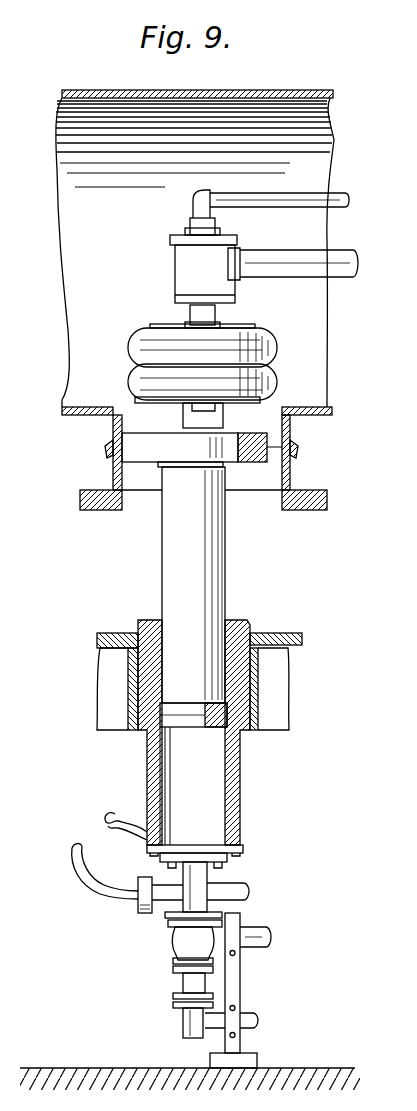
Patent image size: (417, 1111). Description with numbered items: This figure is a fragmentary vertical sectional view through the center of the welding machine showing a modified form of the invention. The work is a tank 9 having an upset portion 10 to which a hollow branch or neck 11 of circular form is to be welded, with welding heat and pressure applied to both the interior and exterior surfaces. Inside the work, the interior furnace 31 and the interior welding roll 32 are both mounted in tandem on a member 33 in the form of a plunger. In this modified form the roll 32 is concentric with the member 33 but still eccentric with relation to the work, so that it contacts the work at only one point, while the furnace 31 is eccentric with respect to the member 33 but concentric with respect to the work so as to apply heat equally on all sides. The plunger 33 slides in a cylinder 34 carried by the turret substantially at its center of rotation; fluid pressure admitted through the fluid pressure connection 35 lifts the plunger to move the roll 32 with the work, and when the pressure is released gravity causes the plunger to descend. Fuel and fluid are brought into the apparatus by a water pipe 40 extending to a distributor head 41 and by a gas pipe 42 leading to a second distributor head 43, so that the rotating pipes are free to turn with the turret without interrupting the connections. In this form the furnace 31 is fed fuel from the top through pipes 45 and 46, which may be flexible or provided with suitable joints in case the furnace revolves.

The tank 9 is at (195, 252).
The upset portion 10 is at (132, 397).
The hollow branch or neck 11 is at (286, 448).
The interior furnace 31 is at (272, 345).
The interior welding roll 32 is at (238, 460).
The member (plunger) 33 is at (193, 585).
The cylinder 34 is at (240, 809).
The fluid pressure connection 35 is at (128, 816).
The water pipe 40 is at (250, 1027).
The distributor head 41 is at (160, 1034).
The gas pipe 42 is at (262, 942).
The second distributor head 43 is at (158, 943).
The pipe 45 is at (368, 188).
The pipe 46 is at (358, 268).